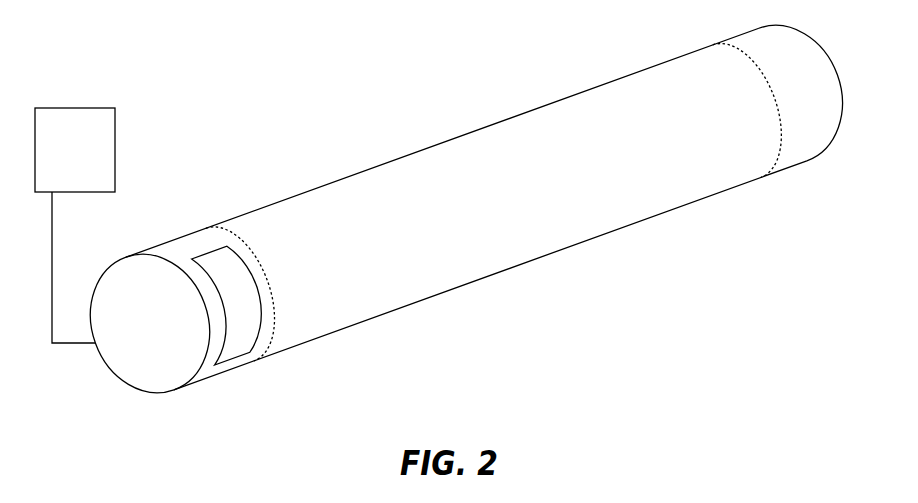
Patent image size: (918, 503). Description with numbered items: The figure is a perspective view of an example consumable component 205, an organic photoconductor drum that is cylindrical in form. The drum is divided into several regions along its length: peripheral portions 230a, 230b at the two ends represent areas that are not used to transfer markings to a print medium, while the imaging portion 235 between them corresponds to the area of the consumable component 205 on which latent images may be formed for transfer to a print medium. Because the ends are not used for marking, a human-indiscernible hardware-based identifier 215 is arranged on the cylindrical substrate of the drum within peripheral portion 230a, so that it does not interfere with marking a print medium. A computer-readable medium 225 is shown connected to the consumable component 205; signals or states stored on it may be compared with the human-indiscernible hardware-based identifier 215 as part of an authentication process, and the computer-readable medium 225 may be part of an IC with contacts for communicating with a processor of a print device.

The consumable component (OPC drum) 205 is at (233, 134).
The human-indiscernible hardware-based identifier 215 is at (240, 338).
The computer-readable medium 225 is at (75, 225).
The peripheral portion 230a is at (208, 243).
The peripheral portion 230b is at (803, 153).
The imaging portion 235 is at (507, 250).